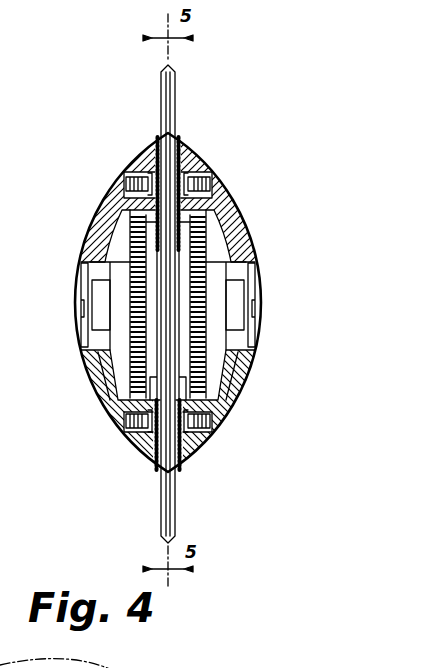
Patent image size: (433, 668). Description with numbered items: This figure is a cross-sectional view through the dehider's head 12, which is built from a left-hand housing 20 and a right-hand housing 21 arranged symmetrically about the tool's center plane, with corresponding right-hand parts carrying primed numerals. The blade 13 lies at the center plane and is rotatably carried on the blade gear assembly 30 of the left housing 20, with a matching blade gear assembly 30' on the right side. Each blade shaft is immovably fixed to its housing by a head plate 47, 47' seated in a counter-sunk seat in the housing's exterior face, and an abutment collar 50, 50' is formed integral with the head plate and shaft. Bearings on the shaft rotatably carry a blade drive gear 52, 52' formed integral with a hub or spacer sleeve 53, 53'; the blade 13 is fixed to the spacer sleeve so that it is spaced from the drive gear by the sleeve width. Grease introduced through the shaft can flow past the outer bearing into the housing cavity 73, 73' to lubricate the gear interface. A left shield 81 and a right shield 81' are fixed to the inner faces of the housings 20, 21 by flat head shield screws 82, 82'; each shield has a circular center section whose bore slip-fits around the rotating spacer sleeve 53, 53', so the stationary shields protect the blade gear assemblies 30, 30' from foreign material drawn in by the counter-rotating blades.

The head 12 is at (36, 373).
The blade 13 is at (176, 71).
The left-hand housing 20 is at (85, 380).
The right-hand housing 21 is at (229, 438).
The blade gear assembly 30 is at (104, 305).
The blade gear assembly 30' is at (234, 299).
The head plate 47 is at (55, 305).
The head plate 47' is at (269, 299).
The abutment collar 50 is at (79, 305).
The abutment collar 50' is at (263, 304).
The blade drive gear 52 is at (98, 304).
The blade drive gear 52' is at (239, 304).
The spacer sleeve 53 is at (89, 315).
The spacer sleeve 53' is at (245, 321).
The left housing cavity 73 is at (97, 396).
The housing cavity 73' is at (245, 286).
The left shield 81 is at (133, 182).
The right shield 81' is at (206, 179).
The flat head shield screws 82 is at (109, 319).
The flat head shield screws 82' is at (235, 291).